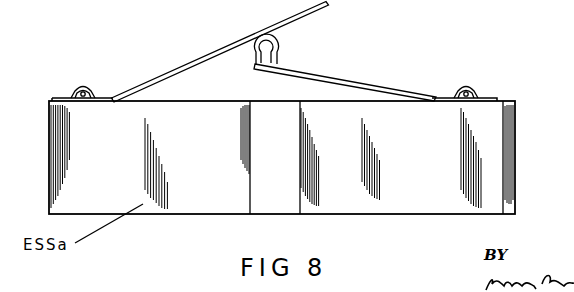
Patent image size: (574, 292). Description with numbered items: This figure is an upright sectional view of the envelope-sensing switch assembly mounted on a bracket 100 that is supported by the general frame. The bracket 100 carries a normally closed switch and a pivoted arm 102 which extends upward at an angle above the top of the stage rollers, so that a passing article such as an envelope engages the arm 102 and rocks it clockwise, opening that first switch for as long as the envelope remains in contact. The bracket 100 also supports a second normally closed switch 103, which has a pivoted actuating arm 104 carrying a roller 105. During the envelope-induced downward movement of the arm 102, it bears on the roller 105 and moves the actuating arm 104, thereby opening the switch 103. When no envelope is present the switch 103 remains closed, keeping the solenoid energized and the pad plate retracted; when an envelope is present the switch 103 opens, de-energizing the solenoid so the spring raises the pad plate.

The bracket 100 is at (273, 206).
The pivoted arm 102 is at (210, 55).
The second normally closed switch 103 is at (490, 147).
The pivoted actuating arm 104 is at (352, 78).
The roller 105 is at (278, 41).